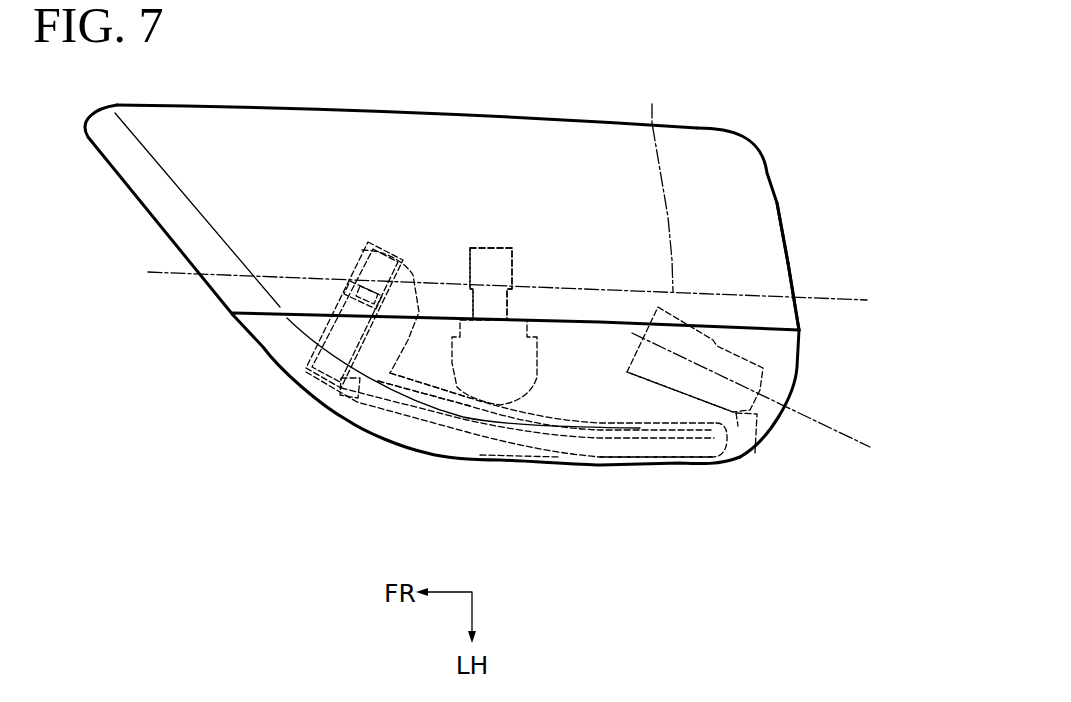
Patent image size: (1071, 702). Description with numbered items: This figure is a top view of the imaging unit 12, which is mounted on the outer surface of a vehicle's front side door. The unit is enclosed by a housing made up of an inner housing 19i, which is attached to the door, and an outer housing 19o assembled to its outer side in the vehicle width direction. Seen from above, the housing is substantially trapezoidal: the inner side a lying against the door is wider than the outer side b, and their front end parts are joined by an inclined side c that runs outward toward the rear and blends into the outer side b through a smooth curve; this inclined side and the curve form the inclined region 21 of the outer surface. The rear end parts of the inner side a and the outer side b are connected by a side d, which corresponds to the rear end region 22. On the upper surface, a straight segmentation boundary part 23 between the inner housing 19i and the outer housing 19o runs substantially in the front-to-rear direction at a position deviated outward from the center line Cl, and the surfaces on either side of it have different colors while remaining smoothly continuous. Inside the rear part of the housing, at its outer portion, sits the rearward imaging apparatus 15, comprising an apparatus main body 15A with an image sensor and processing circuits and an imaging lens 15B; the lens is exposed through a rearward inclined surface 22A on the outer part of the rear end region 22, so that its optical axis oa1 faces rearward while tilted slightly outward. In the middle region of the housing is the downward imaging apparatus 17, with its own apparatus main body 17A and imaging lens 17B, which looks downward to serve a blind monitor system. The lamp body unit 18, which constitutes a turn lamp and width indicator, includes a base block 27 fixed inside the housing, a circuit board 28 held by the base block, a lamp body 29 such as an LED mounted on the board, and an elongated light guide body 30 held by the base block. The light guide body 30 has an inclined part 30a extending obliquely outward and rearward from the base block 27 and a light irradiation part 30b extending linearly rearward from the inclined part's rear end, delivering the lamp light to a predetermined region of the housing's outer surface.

The imaging unit 12 is at (744, 126).
The rearward imaging apparatus 15 is at (660, 405).
The apparatus main body 15A is at (677, 397).
The imaging lens 15B is at (752, 452).
The downward imaging apparatus 17 is at (522, 422).
The apparatus main body 17A is at (513, 262).
The imaging lens 17B is at (453, 413).
The lamp body unit 18 is at (597, 470).
The inner housing 19i is at (786, 238).
The outer housing 19o is at (800, 333).
The inclined region 21 is at (333, 412).
The rear end region 22 is at (779, 202).
The rearward inclined surface 22A is at (766, 437).
The segmentation boundary part 23 is at (266, 317).
The base block 27 is at (385, 249).
The circuit board 28 is at (362, 240).
The lamp body 29 is at (353, 405).
The light guide body 30 is at (540, 460).
The inclined part 30a is at (397, 413).
The light irradiation part 30b is at (620, 463).
The inner side a is at (330, 108).
The outer side b is at (483, 463).
The inclined side c is at (211, 292).
The side d is at (792, 262).
The center line Cl is at (655, 184).
The optical axis oa1 is at (833, 426).